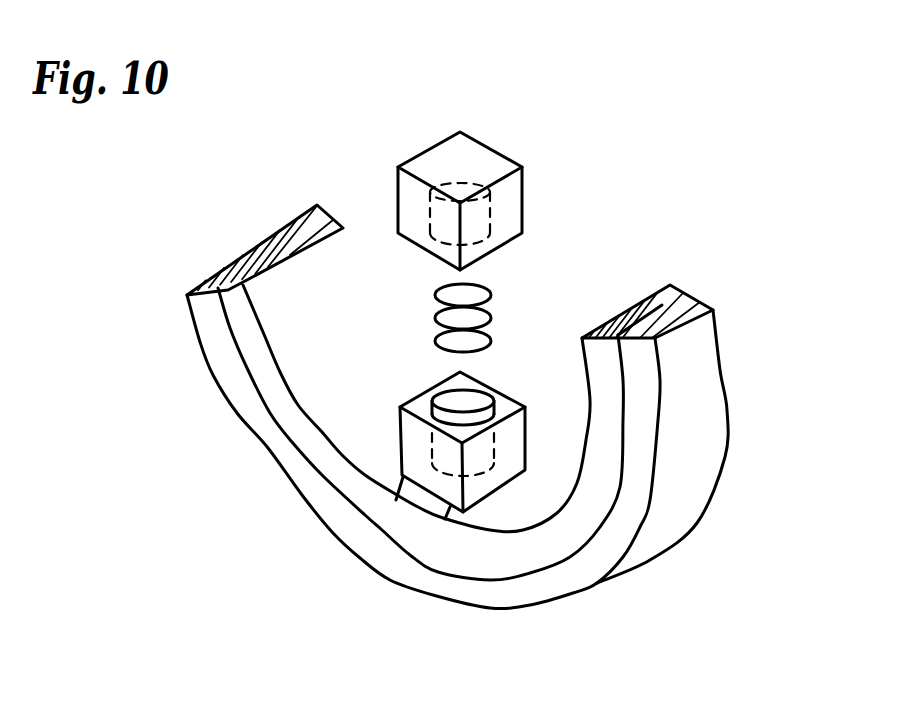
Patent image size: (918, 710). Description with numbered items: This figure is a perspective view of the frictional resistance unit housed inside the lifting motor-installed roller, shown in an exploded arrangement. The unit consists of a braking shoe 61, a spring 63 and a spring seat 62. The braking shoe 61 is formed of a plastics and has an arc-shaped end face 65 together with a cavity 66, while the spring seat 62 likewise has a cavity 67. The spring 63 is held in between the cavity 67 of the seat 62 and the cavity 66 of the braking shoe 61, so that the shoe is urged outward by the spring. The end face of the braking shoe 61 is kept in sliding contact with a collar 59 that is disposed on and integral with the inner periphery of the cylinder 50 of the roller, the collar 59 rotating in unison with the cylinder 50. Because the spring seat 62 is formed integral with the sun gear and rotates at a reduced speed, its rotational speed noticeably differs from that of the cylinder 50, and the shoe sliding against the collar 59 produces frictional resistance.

The cylinder 50 is at (673, 505).
The collar 59 is at (253, 357).
The braking shoe 61 is at (397, 500).
The spring seat 62 is at (478, 157).
The spring 63 is at (493, 302).
The arc-shaped end face 65 is at (445, 519).
The cavity 66 is at (462, 408).
The cavity 67 is at (413, 170).